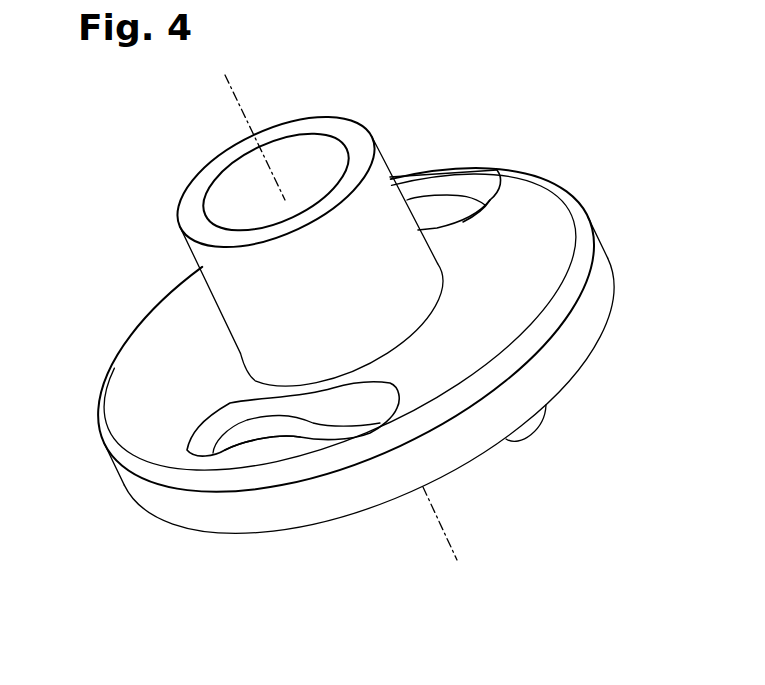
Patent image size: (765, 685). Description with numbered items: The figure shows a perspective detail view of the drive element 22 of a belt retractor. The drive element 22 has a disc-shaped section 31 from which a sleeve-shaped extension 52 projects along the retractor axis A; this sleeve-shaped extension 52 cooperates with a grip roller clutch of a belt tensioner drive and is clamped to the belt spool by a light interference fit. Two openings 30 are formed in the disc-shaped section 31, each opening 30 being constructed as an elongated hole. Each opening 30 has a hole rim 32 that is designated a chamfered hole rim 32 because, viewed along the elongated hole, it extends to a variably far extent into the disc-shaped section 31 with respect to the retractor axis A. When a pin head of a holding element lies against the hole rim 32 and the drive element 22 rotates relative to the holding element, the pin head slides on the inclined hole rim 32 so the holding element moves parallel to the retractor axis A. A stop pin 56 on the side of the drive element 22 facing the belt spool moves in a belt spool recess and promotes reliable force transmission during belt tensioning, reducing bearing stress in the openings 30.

The drive element 22 is at (143, 289).
The opening 30 is at (430, 210).
The disc-shaped section 31 is at (543, 268).
The chamfered hole rim 32 is at (485, 192).
The sleeve-shaped extension 52 is at (334, 127).
The stop pin 56 is at (537, 427).
The retractor axis A is at (450, 540).